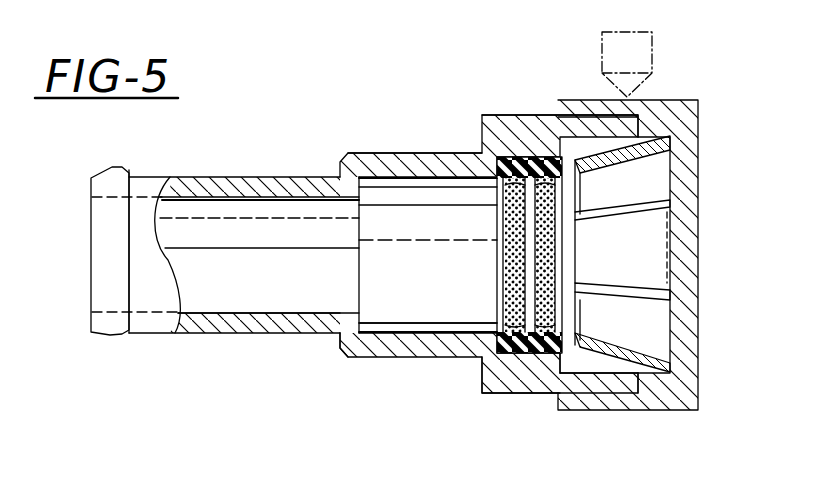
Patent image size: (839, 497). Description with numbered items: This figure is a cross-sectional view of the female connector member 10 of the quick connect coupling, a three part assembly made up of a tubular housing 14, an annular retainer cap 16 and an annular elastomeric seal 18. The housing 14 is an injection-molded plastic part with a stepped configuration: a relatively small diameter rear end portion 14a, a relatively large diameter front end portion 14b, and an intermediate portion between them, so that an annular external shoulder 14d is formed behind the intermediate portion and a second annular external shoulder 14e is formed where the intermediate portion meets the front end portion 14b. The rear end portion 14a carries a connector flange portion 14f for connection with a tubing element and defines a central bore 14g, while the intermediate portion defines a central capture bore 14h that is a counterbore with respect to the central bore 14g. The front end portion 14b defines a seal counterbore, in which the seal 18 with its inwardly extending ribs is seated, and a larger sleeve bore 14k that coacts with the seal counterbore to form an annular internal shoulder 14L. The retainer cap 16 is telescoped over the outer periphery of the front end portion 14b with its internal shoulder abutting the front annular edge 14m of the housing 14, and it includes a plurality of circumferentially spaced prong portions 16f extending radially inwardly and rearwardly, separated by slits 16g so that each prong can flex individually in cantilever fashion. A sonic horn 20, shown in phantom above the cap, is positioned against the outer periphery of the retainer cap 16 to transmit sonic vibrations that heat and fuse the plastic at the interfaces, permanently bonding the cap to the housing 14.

The female connector member 10 is at (328, 155).
The tubular housing 14 is at (408, 150).
The rear end portion 14a is at (250, 178).
The front end portion 14b is at (518, 115).
The annular external shoulder 14d is at (338, 338).
The annular external shoulder 14e is at (473, 377).
The connector flange portion 14f is at (120, 335).
The central bore 14g is at (238, 314).
The central capture bore 14h is at (414, 324).
The sleeve bore 14k is at (612, 376).
The annular internal shoulder 14L is at (570, 372).
The front annular edge 14m is at (640, 381).
The annular retainer cap 16 is at (688, 97).
The prong portions 16f is at (650, 186).
The slits 16g is at (665, 238).
The annular elastomeric seal 18 is at (525, 372).
The sonic horn 20 is at (653, 62).